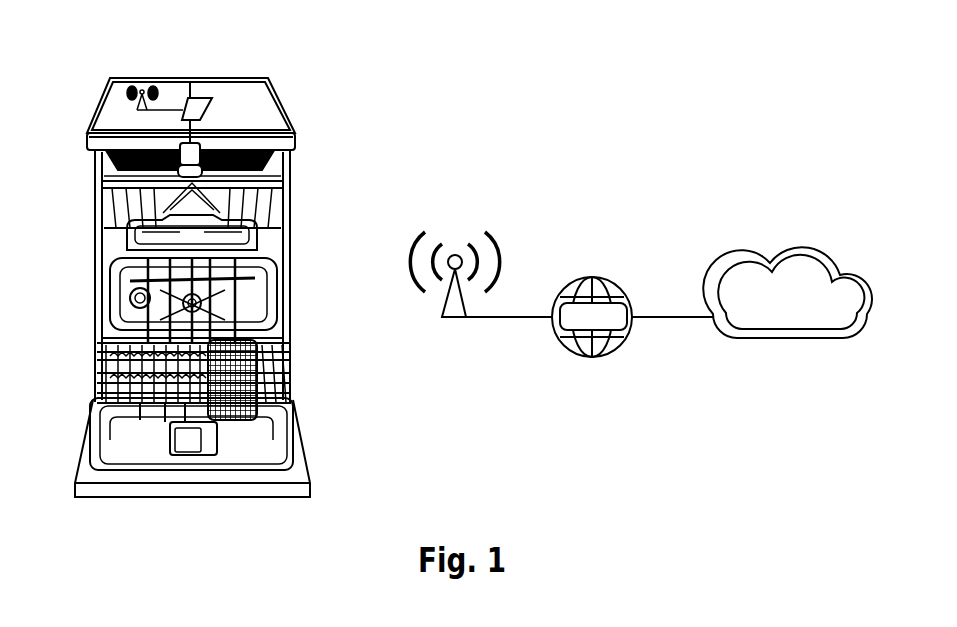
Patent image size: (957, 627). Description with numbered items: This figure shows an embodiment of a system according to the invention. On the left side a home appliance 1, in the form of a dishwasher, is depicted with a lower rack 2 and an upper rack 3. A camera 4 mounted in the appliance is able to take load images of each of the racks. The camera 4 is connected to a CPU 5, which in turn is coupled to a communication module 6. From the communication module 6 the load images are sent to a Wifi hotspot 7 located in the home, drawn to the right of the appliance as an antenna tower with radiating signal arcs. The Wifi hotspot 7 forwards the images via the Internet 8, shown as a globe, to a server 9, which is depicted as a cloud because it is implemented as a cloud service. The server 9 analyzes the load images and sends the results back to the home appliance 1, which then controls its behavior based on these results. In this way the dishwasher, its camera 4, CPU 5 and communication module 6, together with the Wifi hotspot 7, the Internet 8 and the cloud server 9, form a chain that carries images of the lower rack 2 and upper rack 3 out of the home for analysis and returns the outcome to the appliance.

The home appliance 1 is at (240, 110).
The lower rack 2 is at (290, 382).
The upper rack 3 is at (290, 212).
The camera 4 is at (192, 153).
The CPU 5 is at (190, 98).
The communication module 6 is at (138, 110).
The Wifi hotspot 7 is at (490, 240).
The Internet 8 is at (613, 280).
The server 9 is at (770, 288).